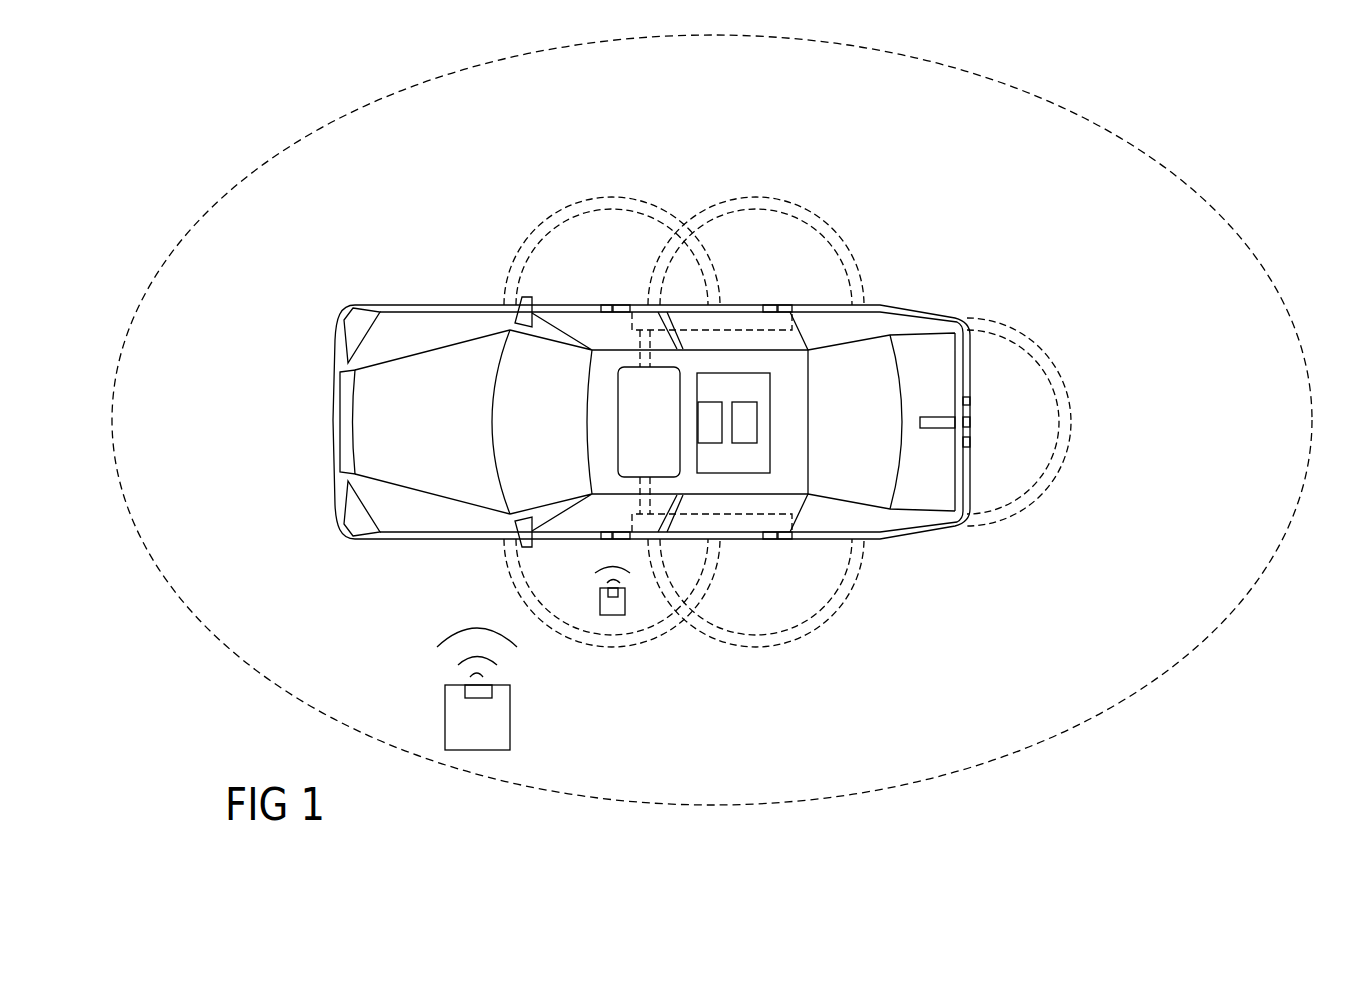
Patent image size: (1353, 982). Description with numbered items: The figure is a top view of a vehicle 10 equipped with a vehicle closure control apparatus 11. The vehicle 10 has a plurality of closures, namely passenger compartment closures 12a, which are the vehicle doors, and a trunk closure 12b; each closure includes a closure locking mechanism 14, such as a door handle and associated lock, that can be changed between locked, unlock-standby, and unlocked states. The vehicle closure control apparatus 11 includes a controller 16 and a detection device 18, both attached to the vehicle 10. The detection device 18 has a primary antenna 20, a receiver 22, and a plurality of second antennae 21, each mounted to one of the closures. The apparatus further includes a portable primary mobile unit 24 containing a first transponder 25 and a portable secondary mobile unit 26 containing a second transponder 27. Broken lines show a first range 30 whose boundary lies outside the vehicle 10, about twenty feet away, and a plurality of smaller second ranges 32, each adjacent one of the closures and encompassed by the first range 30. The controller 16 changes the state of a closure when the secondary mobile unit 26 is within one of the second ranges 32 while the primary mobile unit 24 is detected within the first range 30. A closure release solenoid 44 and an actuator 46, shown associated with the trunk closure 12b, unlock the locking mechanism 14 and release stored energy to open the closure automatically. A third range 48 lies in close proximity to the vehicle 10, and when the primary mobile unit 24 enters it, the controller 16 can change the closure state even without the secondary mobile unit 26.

The vehicle 10 is at (472, 182).
The vehicle closure control apparatus 11 is at (605, 406).
The passenger compartment closures 12a is at (588, 303).
The trunk closure 12b is at (943, 410).
The closure locking mechanism 14 is at (627, 303).
The controller 16 is at (627, 380).
The detection device 18 is at (757, 388).
The primary antenna 20 is at (715, 420).
The second antennae 21 is at (613, 303).
The receiver 22 is at (750, 432).
The primary mobile unit 24 is at (495, 720).
The first transponder 25 is at (465, 686).
The secondary mobile unit 26 is at (612, 612).
The second transponder 27 is at (600, 588).
The first range 30 is at (1122, 128).
The second ranges 32 is at (517, 257).
The closure release solenoid 44 is at (970, 445).
The actuator 46 is at (930, 425).
The third range 48 is at (533, 240).